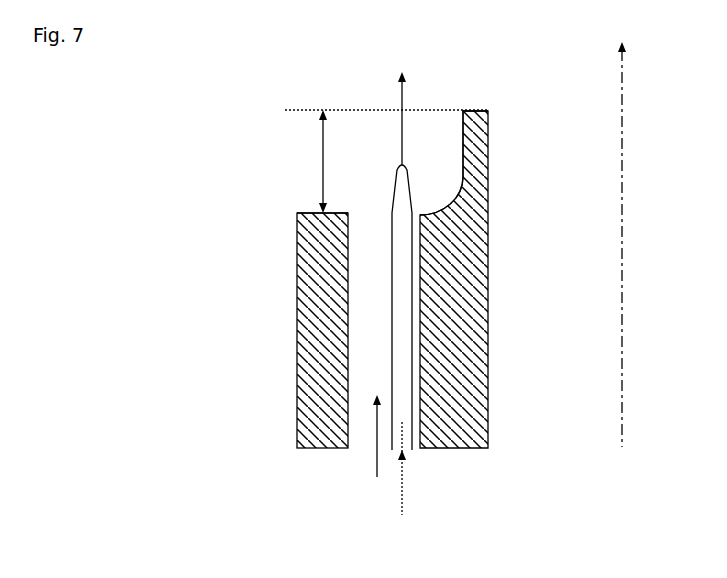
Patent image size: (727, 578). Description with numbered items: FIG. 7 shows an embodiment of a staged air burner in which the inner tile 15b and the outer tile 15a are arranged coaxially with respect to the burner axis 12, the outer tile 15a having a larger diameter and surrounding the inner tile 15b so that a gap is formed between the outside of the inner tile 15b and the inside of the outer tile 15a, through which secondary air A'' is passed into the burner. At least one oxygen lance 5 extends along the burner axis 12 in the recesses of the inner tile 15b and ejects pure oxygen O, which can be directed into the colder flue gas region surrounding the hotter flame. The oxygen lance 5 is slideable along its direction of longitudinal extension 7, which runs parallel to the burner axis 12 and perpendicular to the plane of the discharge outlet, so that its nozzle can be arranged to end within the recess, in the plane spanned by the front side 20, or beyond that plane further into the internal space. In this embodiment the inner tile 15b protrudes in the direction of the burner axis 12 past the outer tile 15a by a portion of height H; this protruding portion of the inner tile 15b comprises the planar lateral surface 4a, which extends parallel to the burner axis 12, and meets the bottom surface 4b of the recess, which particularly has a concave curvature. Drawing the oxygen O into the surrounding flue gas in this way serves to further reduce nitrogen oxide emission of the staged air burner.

The planar lateral surface 4a is at (462, 111).
The bottom surface 4b is at (443, 212).
The oxygen lance 5 is at (403, 455).
The direction of longitudinal extension 7 is at (401, 102).
The burner axis 12 is at (622, 145).
The outer tile 15a is at (297, 288).
The inner tile 15b is at (489, 270).
The front side 20 is at (322, 203).
The height H is at (323, 173).
The oxygen O is at (400, 485).
The secondary air A is at (375, 448).